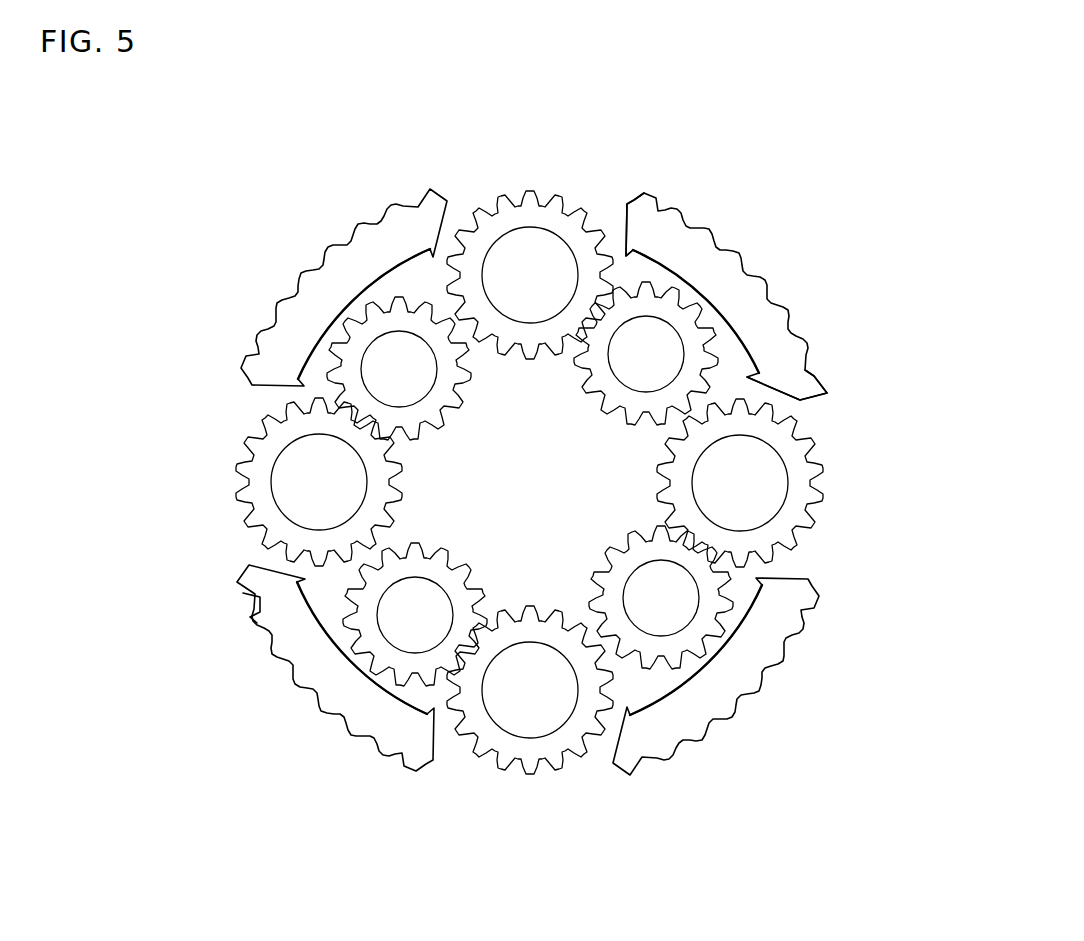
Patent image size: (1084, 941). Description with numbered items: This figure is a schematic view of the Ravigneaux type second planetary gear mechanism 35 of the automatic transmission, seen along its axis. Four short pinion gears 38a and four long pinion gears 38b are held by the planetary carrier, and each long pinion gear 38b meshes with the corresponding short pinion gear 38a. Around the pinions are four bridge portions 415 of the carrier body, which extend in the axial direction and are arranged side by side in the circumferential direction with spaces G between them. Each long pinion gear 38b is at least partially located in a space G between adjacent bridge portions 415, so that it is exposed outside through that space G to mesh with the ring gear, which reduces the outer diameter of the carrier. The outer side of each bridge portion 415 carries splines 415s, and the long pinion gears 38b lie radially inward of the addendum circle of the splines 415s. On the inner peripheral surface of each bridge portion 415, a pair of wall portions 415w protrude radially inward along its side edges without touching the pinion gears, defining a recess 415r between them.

The second planetary gear mechanism 35 is at (220, 380).
The short pinion gear 38a is at (460, 555).
The long pinion gear 38b is at (482, 226).
The bridge portion 415 is at (314, 303).
The spline 415s is at (352, 234).
The wall portion 415w is at (642, 196).
The recess 415r is at (312, 598).
The space G is at (597, 213).